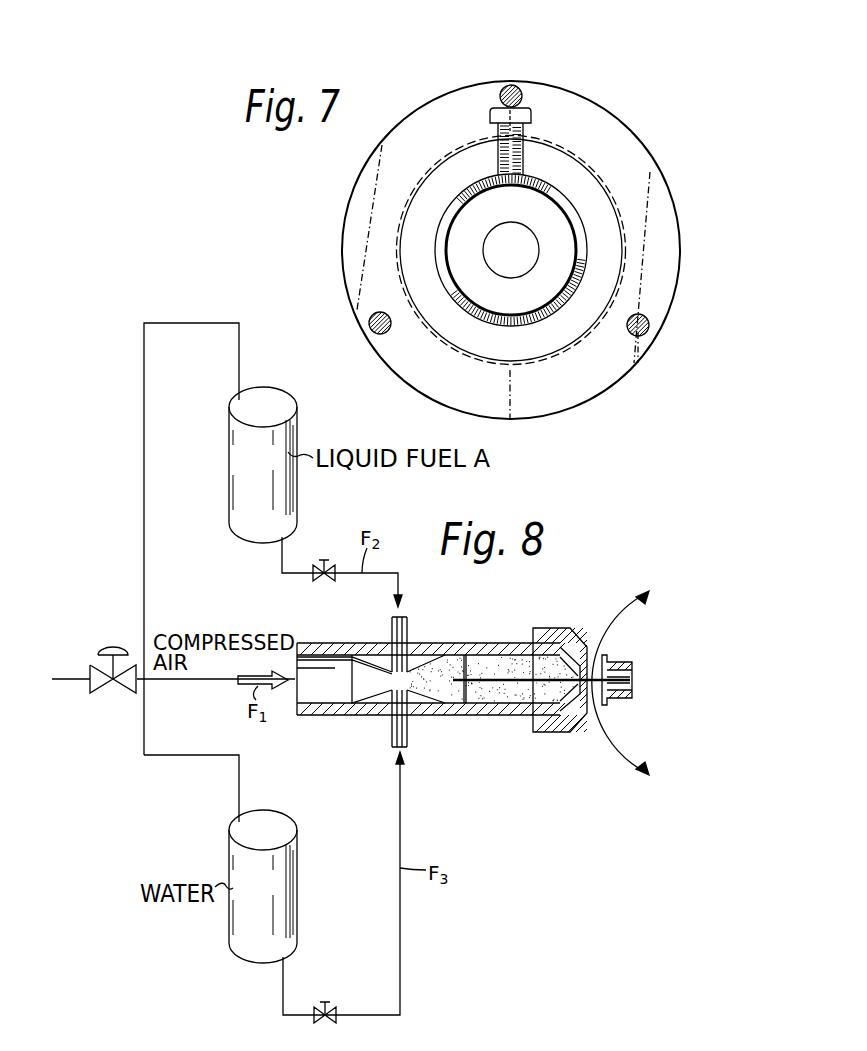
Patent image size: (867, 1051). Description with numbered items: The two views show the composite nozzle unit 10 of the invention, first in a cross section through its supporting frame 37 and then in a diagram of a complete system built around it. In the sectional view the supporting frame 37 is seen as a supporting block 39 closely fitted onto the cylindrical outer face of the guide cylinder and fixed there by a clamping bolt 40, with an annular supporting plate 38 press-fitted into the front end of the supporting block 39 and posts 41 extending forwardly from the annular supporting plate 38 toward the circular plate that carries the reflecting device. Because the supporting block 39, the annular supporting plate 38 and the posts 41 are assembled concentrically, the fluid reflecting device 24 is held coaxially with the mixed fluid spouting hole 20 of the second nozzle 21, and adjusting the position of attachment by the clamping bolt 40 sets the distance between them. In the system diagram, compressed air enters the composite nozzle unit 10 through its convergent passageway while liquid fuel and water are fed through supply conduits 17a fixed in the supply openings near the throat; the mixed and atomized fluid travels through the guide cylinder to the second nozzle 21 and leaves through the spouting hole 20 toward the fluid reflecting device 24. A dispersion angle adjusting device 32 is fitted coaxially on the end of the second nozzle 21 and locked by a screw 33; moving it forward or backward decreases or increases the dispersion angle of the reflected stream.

In FIG. 8, the composite nozzle unit 10 is at (497, 718).
In FIG. 8, the supply conduit 17a is at (409, 634).
In FIG. 7, the mixed fluid spouting hole 20 is at (503, 223).
In FIG. 7, the mixed fluid second nozzle 21 is at (558, 245).
In FIG. 8, the fluid reflecting device 24 is at (632, 693).
In FIG. 7, the dispersion angle adjusting device 32 is at (451, 287).
In FIG. 8, the dispersion angle adjusting device 32 is at (548, 733).
In FIG. 7, the screw 33 is at (522, 176).
In FIG. 7, the supporting frame 37 is at (553, 418).
In FIG. 7, the annular supporting plate 38 is at (627, 139).
In FIG. 7, the supporting block 39 is at (603, 202).
In FIG. 7, the clamping bolt 40 is at (527, 108).
In FIG. 7, the posts 41 is at (377, 334).